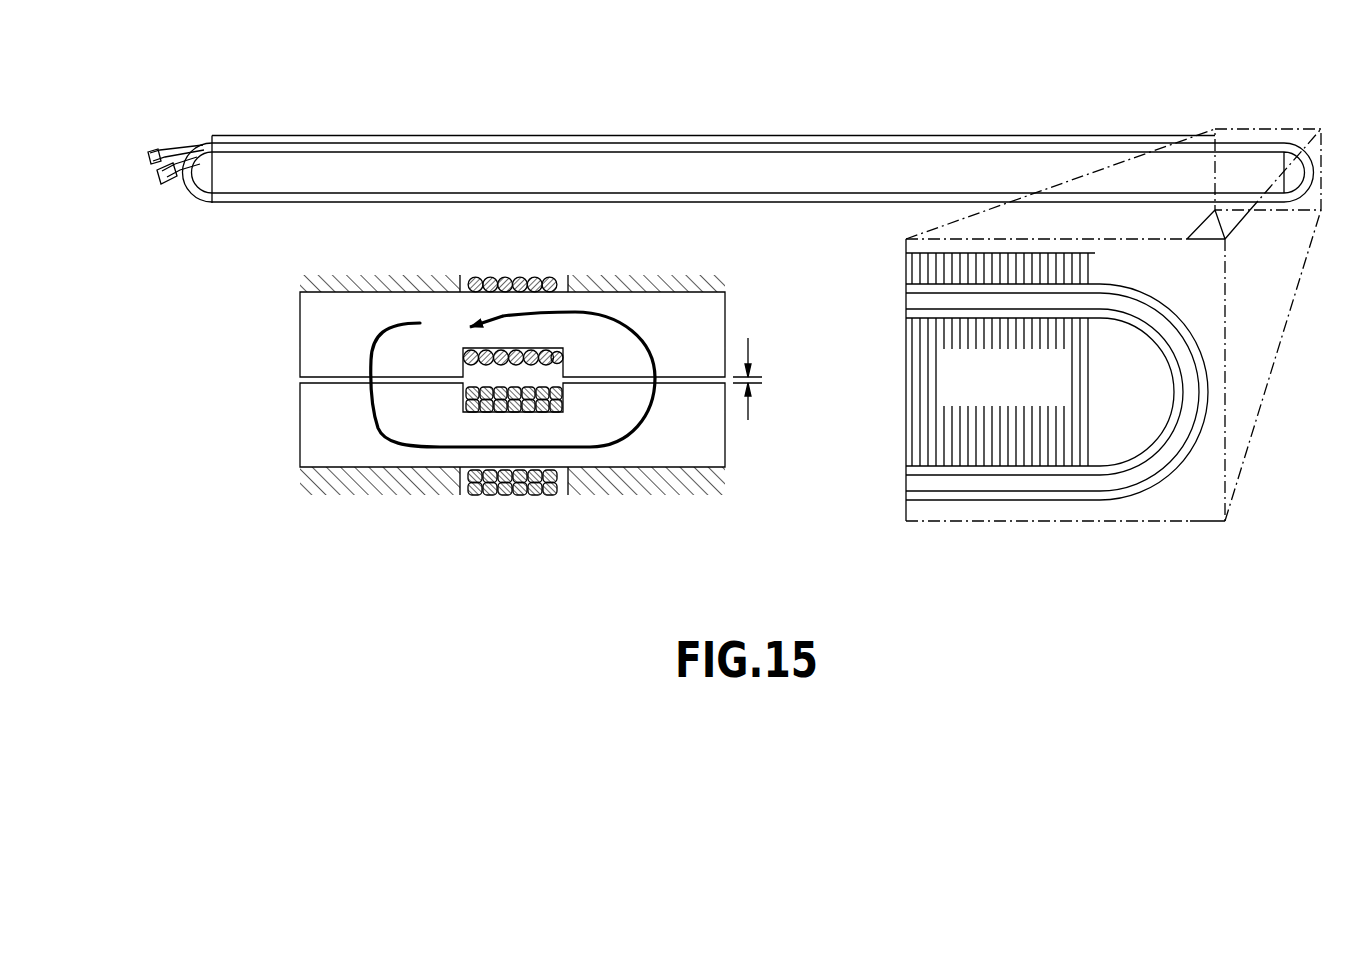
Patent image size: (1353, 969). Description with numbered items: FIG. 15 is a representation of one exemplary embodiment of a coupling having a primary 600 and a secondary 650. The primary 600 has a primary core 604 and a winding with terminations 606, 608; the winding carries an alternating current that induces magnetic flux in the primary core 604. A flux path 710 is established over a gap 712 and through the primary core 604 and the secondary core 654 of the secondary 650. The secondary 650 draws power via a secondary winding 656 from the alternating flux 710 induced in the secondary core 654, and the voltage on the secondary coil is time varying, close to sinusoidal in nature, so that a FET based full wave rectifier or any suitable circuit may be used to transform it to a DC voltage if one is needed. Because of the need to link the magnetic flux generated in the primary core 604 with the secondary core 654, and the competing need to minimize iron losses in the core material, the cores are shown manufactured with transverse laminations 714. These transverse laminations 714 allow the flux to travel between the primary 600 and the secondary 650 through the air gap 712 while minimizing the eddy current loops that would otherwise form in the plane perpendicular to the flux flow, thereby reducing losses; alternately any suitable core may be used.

The primary 600 is at (540, 431).
The primary core 604 is at (323, 440).
The termination 606 is at (662, 430).
The termination 608 is at (563, 410).
The secondary 650 is at (734, 329).
The secondary core 654 is at (322, 315).
The secondary winding 656 is at (1023, 483).
The flux path 710 is at (372, 398).
The gap 712 is at (748, 338).
The transverse laminations 714 is at (957, 442).